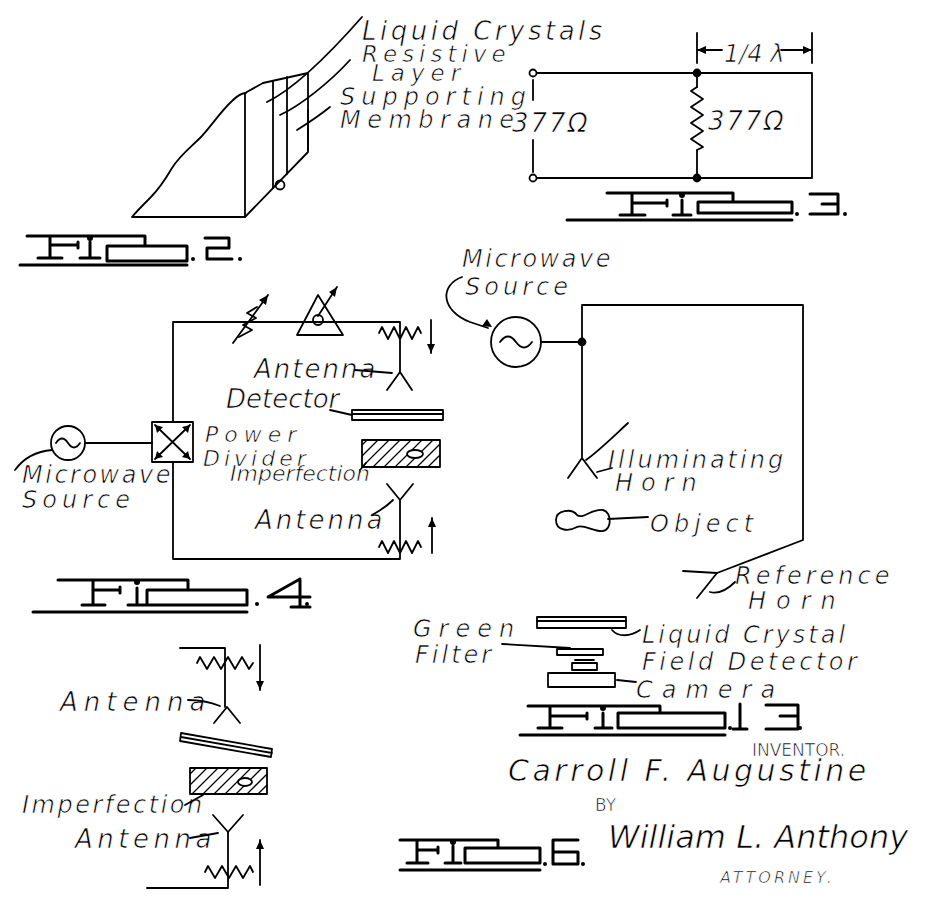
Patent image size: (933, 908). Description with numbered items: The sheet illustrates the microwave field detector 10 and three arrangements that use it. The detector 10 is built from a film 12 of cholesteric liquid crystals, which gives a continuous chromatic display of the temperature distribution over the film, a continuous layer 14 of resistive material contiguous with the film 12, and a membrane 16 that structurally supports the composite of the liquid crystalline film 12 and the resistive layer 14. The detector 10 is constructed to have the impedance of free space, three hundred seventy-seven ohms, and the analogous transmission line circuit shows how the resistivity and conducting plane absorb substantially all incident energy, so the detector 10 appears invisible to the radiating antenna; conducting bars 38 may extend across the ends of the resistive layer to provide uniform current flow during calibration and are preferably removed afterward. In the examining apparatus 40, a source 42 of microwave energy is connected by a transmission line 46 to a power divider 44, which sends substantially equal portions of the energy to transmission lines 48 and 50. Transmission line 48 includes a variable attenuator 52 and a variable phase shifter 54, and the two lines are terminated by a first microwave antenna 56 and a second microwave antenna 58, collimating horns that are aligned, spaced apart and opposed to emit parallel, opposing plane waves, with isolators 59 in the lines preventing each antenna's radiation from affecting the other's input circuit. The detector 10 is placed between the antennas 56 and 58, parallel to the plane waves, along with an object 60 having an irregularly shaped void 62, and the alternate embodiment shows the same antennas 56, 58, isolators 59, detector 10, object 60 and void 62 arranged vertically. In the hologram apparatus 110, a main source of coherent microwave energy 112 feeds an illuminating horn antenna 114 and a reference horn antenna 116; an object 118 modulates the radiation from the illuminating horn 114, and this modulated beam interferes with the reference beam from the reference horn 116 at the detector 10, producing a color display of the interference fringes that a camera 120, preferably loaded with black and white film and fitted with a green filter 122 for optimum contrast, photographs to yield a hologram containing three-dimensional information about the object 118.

In FIG. 2, the microwave field detector 10 is at (198, 145).
In FIG. 4, the microwave field detector 10 is at (446, 409).
In FIG. 13, the microwave field detector 10 is at (610, 616).
In FIG. 6, the microwave field detector 10 is at (277, 748).
In FIG. 2, the film of cholesteric liquid crystals 12 is at (263, 83).
In FIG. 2, the layer of resistive material 14 is at (282, 168).
In FIG. 2, the membrane 16 is at (297, 151).
In FIG. 2, the conducting bars 38 is at (285, 189).
In FIG. 4, the apparatus for non-destructive internal examination of an object 40 is at (228, 366).
In FIG. 4, the source of microwave energy 42 is at (82, 385).
In FIG. 4, the power divider 44 is at (162, 422).
In FIG. 4, the transmission line 46 is at (110, 443).
In FIG. 4, the transmission line 48 is at (172, 530).
In FIG. 4, the transmission line 50 is at (195, 322).
In FIG. 4, the variable attenuator 52 is at (247, 312).
In FIG. 4, the variable phase shifter 54 is at (310, 300).
In FIG. 4, the first microwave antenna 56 is at (410, 498).
In FIG. 6, the first microwave antenna 56 is at (237, 830).
In FIG. 4, the second microwave antenna 58 is at (408, 372).
In FIG. 6, the second microwave antenna 58 is at (235, 710).
In FIG. 4, the isolators 59 is at (410, 333).
In FIG. 6, the isolators 59 is at (240, 662).
In FIG. 4, the object 60 is at (440, 440).
In FIG. 6, the object 60 is at (270, 783).
In FIG. 4, the void 62 is at (425, 456).
In FIG. 6, the void 62 is at (252, 787).
In FIG. 13, the apparatus for forming holograms 110 is at (760, 347).
In FIG. 13, the main source of coherent microwave energy 112 is at (539, 332).
In FIG. 13, the illuminating horn antenna 114 is at (624, 410).
In FIG. 13, the reference horn antenna 116 is at (717, 572).
In FIG. 13, the object 118 is at (598, 533).
In FIG. 13, the camera 120 is at (547, 678).
In FIG. 13, the green filter 122 is at (557, 657).